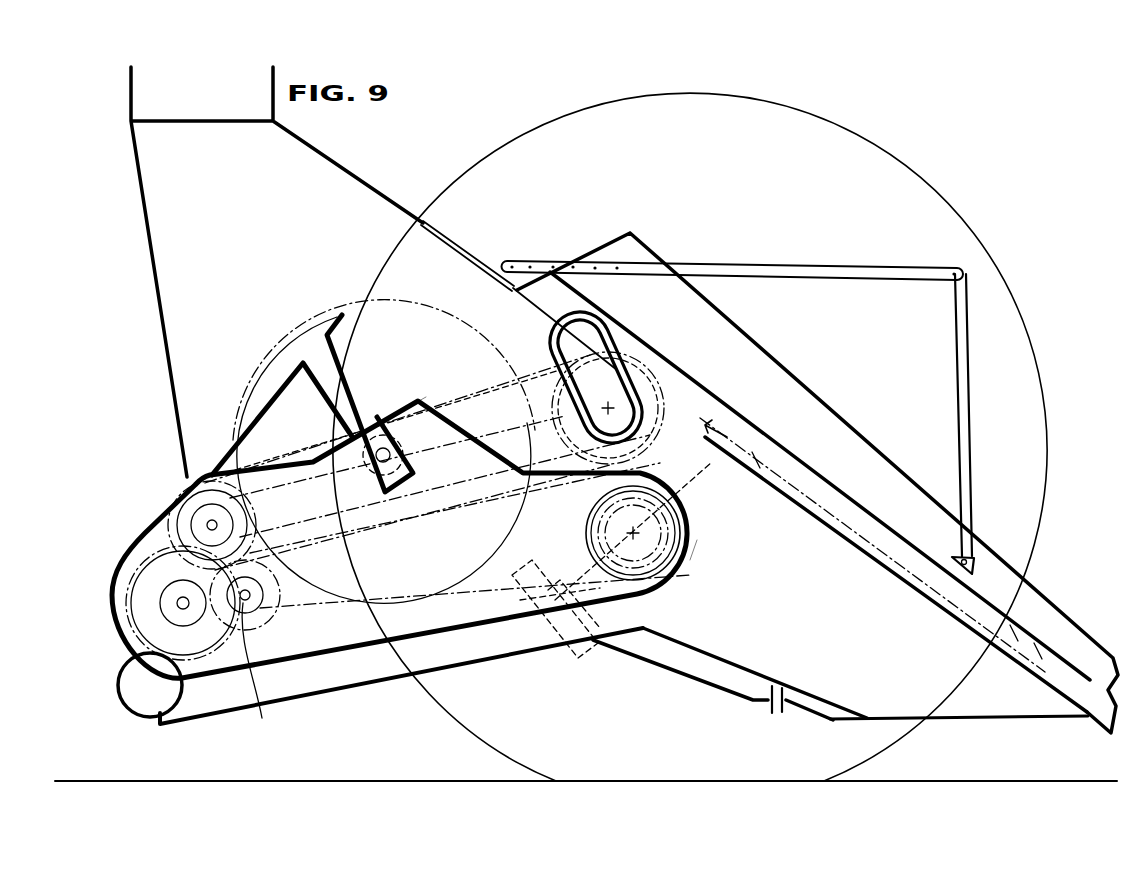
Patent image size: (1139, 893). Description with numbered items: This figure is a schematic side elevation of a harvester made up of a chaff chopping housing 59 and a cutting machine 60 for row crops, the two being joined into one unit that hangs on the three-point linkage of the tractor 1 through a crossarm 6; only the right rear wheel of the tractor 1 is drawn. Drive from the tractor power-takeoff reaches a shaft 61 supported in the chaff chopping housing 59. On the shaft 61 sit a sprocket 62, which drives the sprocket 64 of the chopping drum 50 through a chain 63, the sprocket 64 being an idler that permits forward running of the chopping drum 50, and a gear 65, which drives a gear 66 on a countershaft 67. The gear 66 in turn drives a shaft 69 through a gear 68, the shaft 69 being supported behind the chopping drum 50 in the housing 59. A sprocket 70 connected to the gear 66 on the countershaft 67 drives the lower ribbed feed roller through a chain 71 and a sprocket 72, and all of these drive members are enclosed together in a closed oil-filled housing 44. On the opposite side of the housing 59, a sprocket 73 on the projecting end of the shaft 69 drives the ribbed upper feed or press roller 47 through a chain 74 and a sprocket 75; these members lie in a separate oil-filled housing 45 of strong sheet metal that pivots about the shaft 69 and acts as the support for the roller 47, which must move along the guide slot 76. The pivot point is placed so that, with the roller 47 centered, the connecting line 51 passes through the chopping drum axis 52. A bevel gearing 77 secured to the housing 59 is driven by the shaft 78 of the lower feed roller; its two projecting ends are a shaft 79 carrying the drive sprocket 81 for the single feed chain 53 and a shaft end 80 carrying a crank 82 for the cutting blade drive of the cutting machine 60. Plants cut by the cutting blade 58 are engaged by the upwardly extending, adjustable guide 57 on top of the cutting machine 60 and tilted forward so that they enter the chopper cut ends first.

The tractor 1 is at (931, 192).
The crossarm 6 is at (126, 700).
The closed oil-filled housing 44 is at (383, 637).
The housing 45 is at (530, 378).
The upper feed or press roller 47 is at (663, 366).
The chopping drum 50 is at (288, 340).
The connecting line 51 is at (517, 442).
The chopping drum axis 52 is at (382, 457).
The feed chain 53 is at (845, 517).
The guide 57 is at (970, 434).
The cutting blade 58 is at (912, 722).
The chaff chopping housing 59 is at (141, 543).
The cutting machine 60 is at (836, 389).
The shaft 61 is at (176, 603).
The sprocket 62 is at (120, 569).
The chain 63 is at (350, 530).
The sprocket 64 is at (407, 447).
The gear 65 is at (128, 617).
The gear 66 is at (263, 621).
The countershaft 67 is at (265, 671).
The gear 68 is at (210, 485).
The shaft 69 is at (207, 520).
The sprocket 70 is at (308, 584).
The chain 71 is at (415, 540).
The sprocket 72 is at (590, 521).
The sprocket 73 is at (268, 468).
The chain 74 is at (413, 421).
The sprocket 75 is at (700, 386).
The guide slot 76 is at (610, 340).
The bevel gearing 77 is at (670, 531).
The shaft 78 is at (678, 565).
The shaft 79 is at (700, 470).
The shaft end 80 is at (588, 582).
The drive sprocket 81 is at (740, 441).
The crank 82 is at (510, 578).